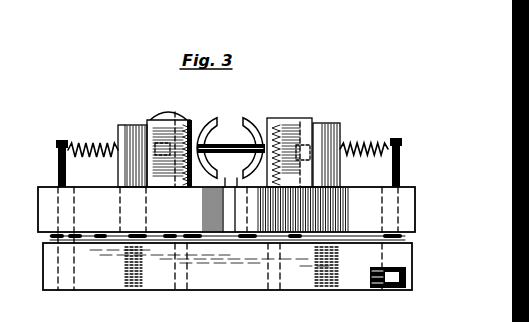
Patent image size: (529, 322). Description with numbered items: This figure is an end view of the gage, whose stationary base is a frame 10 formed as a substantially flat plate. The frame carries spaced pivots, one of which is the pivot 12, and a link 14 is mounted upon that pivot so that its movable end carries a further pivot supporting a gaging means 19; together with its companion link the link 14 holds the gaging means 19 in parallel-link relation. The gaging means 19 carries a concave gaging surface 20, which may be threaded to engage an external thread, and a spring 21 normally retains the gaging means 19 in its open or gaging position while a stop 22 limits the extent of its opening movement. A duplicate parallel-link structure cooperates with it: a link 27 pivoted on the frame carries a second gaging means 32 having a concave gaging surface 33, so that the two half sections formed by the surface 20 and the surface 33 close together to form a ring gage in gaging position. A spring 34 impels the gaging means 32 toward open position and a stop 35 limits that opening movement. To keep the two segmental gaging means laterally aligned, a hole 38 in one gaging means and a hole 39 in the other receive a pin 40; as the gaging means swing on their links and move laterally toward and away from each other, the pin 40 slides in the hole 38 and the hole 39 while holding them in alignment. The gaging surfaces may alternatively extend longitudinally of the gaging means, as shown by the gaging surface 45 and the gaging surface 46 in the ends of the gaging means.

The frame 10 is at (43, 275).
The pivot 12 is at (58, 220).
The link 14 is at (45, 210).
The gaging means 19 is at (155, 120).
The gaging surface 20 is at (178, 118).
The spring 21 is at (86, 158).
The stop 22 is at (120, 125).
The link 27 is at (367, 193).
The gaging means 32 is at (293, 117).
The gaging surface 33 is at (278, 115).
The spring 34 is at (356, 141).
The stop 35 is at (328, 118).
The hole 38 is at (150, 203).
The hole 39 is at (302, 137).
The pin 40 is at (248, 145).
The gaging surface 45 is at (200, 125).
The gaging surface 46 is at (245, 121).